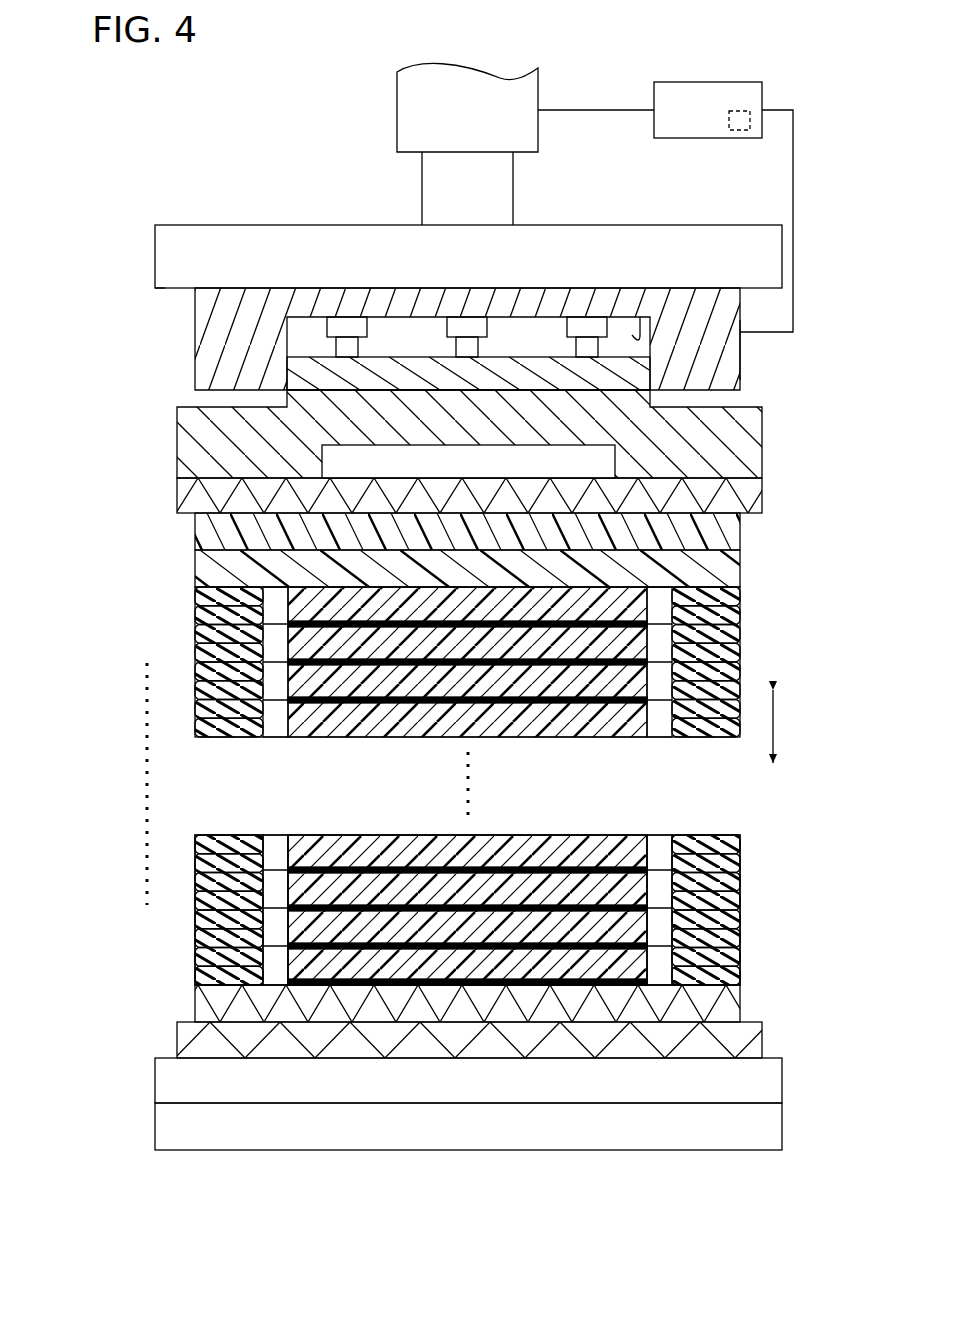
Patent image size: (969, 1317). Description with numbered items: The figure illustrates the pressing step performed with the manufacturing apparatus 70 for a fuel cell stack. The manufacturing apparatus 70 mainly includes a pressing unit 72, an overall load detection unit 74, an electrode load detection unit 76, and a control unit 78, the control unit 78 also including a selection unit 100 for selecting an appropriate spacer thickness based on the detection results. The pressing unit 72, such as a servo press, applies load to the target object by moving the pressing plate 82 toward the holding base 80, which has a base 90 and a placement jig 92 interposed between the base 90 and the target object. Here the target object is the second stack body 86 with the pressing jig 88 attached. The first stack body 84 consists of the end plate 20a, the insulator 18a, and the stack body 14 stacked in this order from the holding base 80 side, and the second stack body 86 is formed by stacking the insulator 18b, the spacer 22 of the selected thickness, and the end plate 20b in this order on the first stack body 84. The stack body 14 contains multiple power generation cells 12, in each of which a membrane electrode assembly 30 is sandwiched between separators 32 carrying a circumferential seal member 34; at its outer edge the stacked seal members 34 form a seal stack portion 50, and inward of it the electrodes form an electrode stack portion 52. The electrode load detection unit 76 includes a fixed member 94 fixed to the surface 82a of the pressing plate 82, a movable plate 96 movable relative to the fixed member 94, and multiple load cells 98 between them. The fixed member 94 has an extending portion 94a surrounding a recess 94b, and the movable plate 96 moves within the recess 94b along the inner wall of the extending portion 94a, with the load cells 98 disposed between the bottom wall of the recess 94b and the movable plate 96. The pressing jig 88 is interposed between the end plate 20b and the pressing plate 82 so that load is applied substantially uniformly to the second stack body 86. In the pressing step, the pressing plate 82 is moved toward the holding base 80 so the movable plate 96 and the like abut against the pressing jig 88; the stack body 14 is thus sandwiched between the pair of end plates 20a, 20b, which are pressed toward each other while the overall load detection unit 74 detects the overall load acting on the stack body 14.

The manufacturing apparatus 70 is at (152, 101).
The pressing unit 72 is at (372, 170).
The overall load detection unit 74 is at (517, 135).
The control unit 78 is at (690, 82).
The selection unit 100 is at (740, 131).
The pressing plate 82 is at (188, 225).
The surface of the pressing plate 82a is at (157, 290).
The electrode load detection unit 76 is at (128, 297).
The fixed member 94 is at (192, 312).
The extending portion 94a is at (730, 350).
The recess 94b is at (632, 327).
The load cells 98 is at (327, 330).
The movable plate 96 is at (300, 377).
The pressing jig 88 is at (195, 440).
The second stack body 86 is at (61, 1052).
The end plate 20b is at (182, 497).
The spacer 22 is at (200, 540).
The insulator 18b is at (205, 568).
The stack body 14 is at (136, 595).
The power generation cells 12 is at (192, 605).
The seal member 34 is at (219, 738).
The separators 32 is at (277, 738).
The membrane electrode assembly 30 is at (358, 738).
The seal stack portion 50 is at (236, 832).
The electrode stack portion 52 is at (404, 832).
The first stack body 84 is at (98, 775).
The insulator 18a is at (195, 1005).
The end plate 20a is at (185, 1034).
The holding base 80 is at (96, 1075).
The placement jig 92 is at (165, 1088).
The base 90 is at (165, 1128).